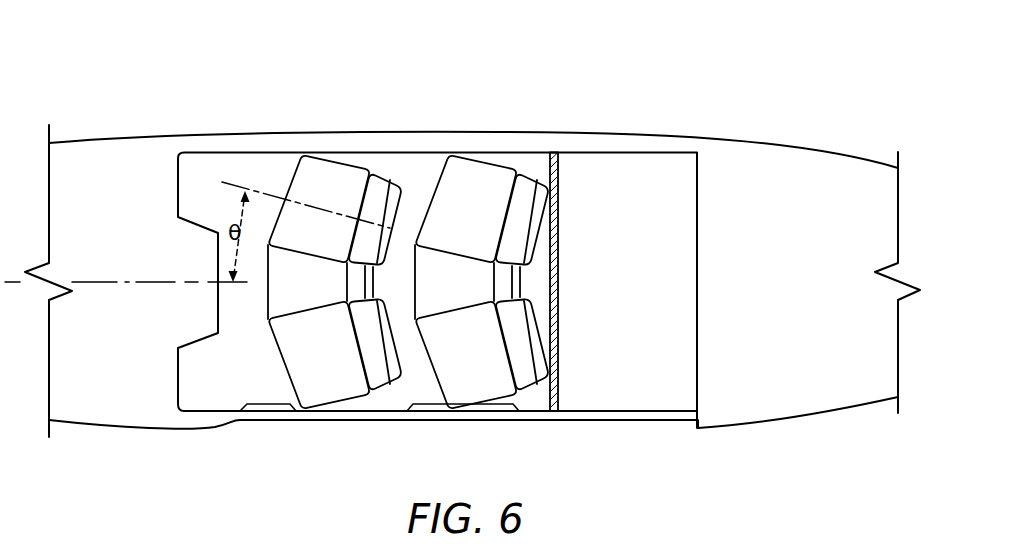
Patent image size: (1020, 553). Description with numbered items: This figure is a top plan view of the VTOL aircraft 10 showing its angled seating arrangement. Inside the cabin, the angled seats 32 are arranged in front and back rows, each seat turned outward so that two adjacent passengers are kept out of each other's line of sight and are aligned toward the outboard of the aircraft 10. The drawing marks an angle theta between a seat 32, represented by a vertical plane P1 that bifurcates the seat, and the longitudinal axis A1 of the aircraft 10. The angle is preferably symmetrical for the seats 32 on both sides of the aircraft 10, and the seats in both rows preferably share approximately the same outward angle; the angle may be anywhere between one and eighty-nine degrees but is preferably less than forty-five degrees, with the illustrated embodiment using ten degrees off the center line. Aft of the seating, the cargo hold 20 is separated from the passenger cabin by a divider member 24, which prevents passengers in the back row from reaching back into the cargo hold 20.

The aircraft 10 is at (791, 91).
The cargo hold 20 is at (640, 286).
The divider member 24 is at (560, 170).
The angled seats 32 is at (298, 167).
The longitudinal axis A1 is at (125, 282).
The vertical plane P1 is at (260, 187).